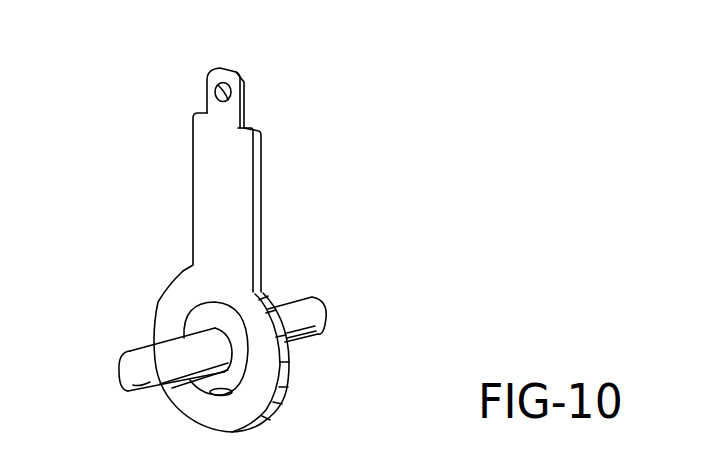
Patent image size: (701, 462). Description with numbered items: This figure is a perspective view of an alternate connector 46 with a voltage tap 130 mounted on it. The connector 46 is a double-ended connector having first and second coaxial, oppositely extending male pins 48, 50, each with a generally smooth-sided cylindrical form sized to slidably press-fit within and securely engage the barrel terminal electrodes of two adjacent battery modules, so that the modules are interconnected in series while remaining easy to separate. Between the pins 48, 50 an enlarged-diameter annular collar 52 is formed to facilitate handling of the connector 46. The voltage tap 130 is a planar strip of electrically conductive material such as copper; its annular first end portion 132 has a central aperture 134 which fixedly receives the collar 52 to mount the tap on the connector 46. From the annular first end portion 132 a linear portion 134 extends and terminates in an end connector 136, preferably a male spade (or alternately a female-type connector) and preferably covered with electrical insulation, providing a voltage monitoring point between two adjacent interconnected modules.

The voltage tap 130 is at (123, 125).
The annular first end portion 132 is at (268, 354).
The linear portion 134 is at (203, 176).
The end connector 136 is at (207, 100).
The connector 46 is at (203, 327).
The first male pin 48 is at (143, 352).
The second male pin 50 is at (300, 307).
The annular collar 52 is at (238, 377).